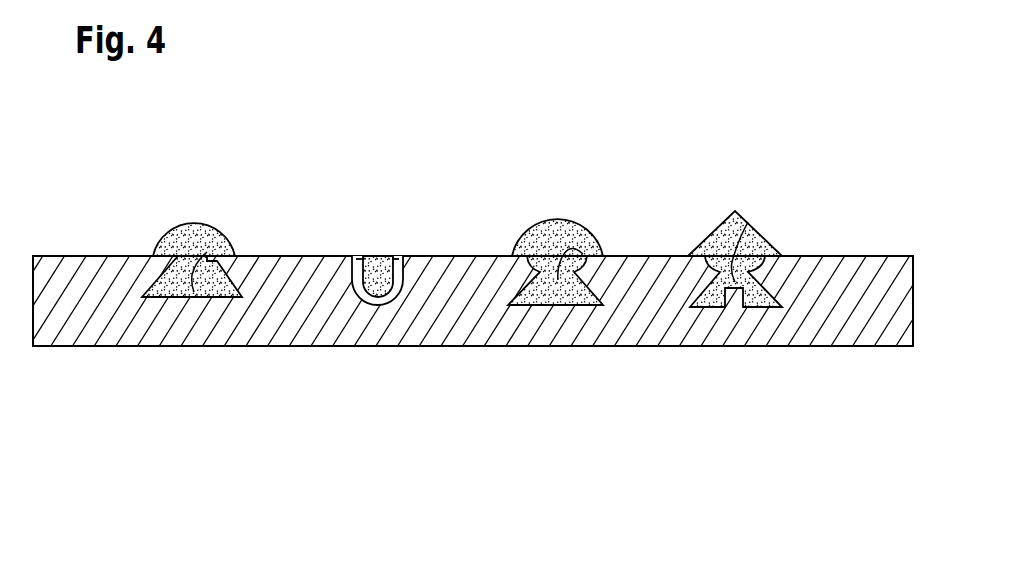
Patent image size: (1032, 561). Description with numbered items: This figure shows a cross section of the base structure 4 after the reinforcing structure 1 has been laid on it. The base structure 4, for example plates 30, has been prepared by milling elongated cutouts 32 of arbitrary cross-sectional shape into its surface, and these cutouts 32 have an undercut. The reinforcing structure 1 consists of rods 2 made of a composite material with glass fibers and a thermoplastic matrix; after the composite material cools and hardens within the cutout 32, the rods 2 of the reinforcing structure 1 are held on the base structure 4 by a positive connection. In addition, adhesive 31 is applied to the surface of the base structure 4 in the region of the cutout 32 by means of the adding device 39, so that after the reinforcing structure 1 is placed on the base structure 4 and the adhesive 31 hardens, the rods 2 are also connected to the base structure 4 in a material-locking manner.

The reinforcing structure 1 is at (498, 227).
The rod 2 is at (498, 227).
The adding device 39 is at (207, 252).
The base structure 4 is at (476, 349).
The plate 30 is at (100, 313).
The adhesive 31 is at (394, 307).
The cutout 32 is at (206, 222).